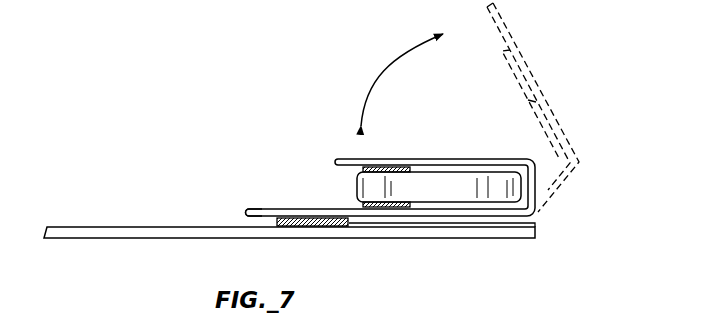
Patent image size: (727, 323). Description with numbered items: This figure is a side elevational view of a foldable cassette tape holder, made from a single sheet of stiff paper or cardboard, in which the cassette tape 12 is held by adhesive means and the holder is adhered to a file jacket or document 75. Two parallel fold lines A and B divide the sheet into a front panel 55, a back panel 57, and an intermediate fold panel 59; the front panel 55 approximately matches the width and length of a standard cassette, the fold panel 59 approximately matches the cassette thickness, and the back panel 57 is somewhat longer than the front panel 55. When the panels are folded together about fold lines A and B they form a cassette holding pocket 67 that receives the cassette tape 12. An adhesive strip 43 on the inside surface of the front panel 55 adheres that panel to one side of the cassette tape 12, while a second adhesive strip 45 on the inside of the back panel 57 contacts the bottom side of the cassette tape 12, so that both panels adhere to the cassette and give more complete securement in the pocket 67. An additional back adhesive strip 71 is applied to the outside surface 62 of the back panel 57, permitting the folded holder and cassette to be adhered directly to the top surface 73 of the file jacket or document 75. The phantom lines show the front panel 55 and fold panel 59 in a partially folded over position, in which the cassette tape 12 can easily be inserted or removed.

The cassette tape 12 is at (471, 178).
The adhesive strip 43 is at (374, 168).
The second adhesive strip 45 is at (395, 205).
The front panel 55 is at (427, 159).
The back panel 57 is at (476, 217).
The intermediate fold panel 59 is at (537, 183).
The outside surface 62 is at (243, 212).
The cassette holding pocket 67 is at (344, 195).
The back adhesive strip 71 is at (312, 220).
The top surface 73 is at (127, 226).
The file jacket or document 75 is at (335, 228).
The fold line A— A is at (541, 159).
The fold line B— B is at (540, 214).